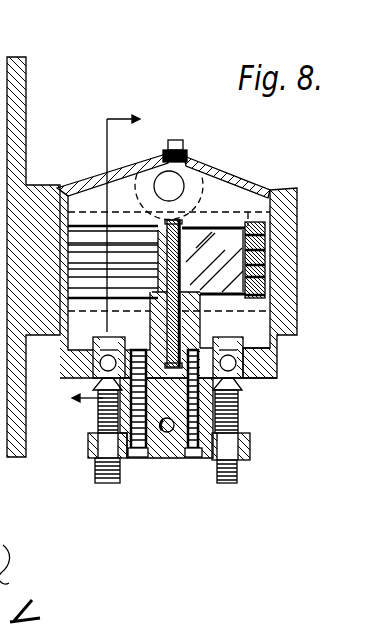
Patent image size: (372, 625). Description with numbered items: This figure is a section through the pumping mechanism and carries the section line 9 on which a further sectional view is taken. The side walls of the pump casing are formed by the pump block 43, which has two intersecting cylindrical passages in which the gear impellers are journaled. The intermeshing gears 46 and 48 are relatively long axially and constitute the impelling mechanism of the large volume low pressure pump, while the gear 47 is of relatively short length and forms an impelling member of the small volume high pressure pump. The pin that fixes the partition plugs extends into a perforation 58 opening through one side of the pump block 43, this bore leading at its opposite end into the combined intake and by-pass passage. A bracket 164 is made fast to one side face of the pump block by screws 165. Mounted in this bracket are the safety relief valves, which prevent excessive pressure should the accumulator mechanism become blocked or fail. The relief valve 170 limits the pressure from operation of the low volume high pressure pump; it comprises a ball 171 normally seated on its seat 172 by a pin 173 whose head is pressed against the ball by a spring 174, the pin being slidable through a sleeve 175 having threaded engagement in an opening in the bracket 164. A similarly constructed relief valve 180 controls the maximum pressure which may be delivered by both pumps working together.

The section line 9- 9 is at (103, 262).
The pump block 43 is at (283, 367).
The gear impeller 46 is at (93, 252).
The gear impeller 47 is at (256, 225).
The gear impeller 48 is at (360, 531).
The perforation 58 is at (249, 306).
The bracket 164 is at (175, 458).
The screw 165 is at (142, 458).
The safety relief valve 170 is at (220, 483).
The ball 171 is at (245, 352).
The seat 172 is at (250, 342).
The pin 173 is at (243, 392).
The spring 174 is at (243, 420).
The sleeve 175 is at (243, 467).
The relief valve 180 is at (100, 414).